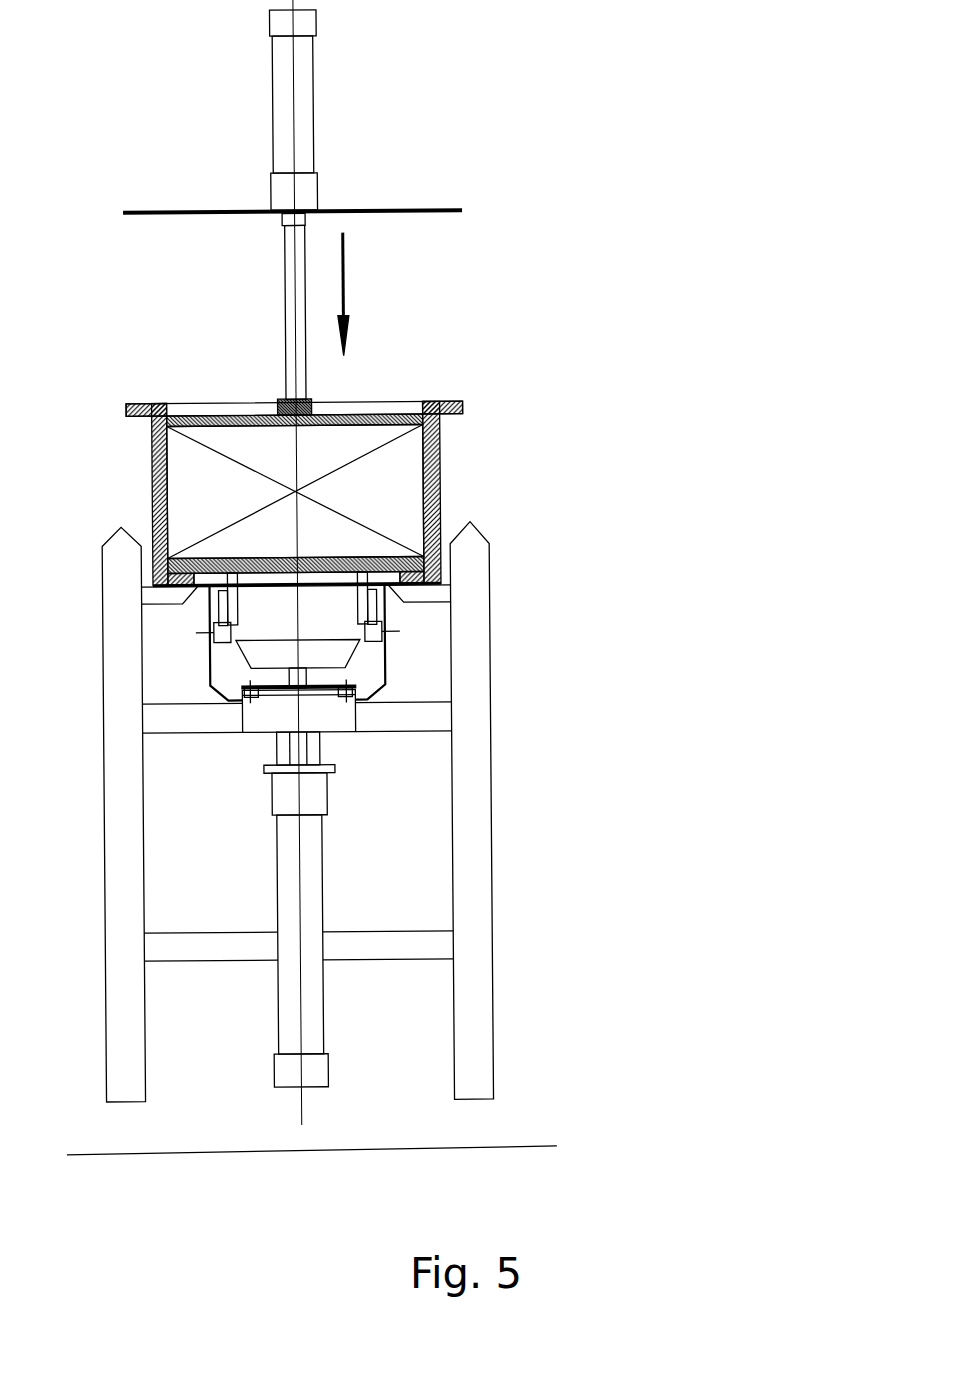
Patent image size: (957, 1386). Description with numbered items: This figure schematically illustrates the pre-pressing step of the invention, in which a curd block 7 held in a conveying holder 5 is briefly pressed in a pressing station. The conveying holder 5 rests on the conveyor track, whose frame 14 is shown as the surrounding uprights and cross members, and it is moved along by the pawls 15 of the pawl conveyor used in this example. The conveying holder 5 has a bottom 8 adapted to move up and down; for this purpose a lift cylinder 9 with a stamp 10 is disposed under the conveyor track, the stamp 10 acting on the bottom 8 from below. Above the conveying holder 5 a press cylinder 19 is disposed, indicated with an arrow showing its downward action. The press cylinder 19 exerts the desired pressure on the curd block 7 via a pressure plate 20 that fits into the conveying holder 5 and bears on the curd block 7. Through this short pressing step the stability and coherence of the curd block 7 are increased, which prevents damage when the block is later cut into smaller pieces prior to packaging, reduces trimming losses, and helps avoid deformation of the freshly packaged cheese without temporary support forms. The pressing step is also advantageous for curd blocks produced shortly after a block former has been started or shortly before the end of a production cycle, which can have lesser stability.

The press cylinder 19 is at (320, 80).
The pressure plate 20 is at (395, 413).
The conveying holder 5 is at (442, 458).
The curd block 7 is at (391, 495).
The bottom 8 is at (206, 557).
The pawls 15 is at (350, 598).
The stamp 10 is at (335, 655).
The frame 14 is at (467, 802).
The lift cylinder 9 is at (311, 877).